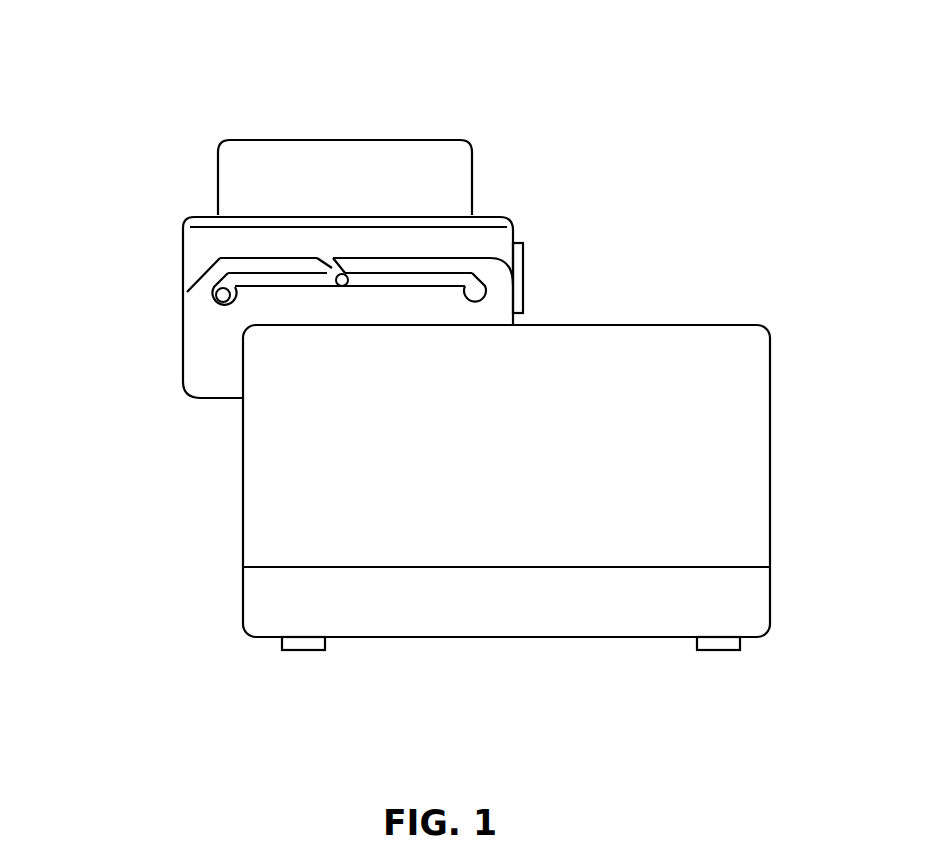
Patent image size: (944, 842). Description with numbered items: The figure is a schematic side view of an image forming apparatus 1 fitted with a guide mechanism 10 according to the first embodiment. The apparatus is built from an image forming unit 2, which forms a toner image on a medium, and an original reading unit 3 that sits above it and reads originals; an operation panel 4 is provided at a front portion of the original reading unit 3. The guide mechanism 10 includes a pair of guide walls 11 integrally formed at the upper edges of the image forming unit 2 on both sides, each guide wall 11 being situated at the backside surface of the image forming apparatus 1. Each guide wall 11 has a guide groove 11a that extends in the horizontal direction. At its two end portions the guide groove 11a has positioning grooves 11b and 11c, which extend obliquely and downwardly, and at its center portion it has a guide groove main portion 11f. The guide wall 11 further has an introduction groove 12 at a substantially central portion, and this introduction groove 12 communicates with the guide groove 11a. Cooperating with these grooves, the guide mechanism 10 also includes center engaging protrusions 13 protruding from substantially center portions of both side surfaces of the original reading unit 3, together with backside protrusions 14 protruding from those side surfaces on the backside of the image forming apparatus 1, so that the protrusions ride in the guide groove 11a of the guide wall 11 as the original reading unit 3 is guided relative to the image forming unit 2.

The image forming apparatus 1 is at (677, 118).
The image forming unit 2 is at (742, 478).
The original reading unit 3 is at (503, 243).
The operation panel 4 is at (522, 298).
The guide mechanism 10 is at (150, 315).
The guide wall 11 is at (523, 263).
The guide groove 11a is at (402, 275).
The positioning groove 11b is at (220, 277).
The positioning groove 11c is at (473, 277).
The guide groove main portion 11f is at (235, 287).
The introduction groove 12 is at (332, 263).
The center engaging protrusion 13 is at (343, 260).
The backside protrusion 14 is at (223, 302).